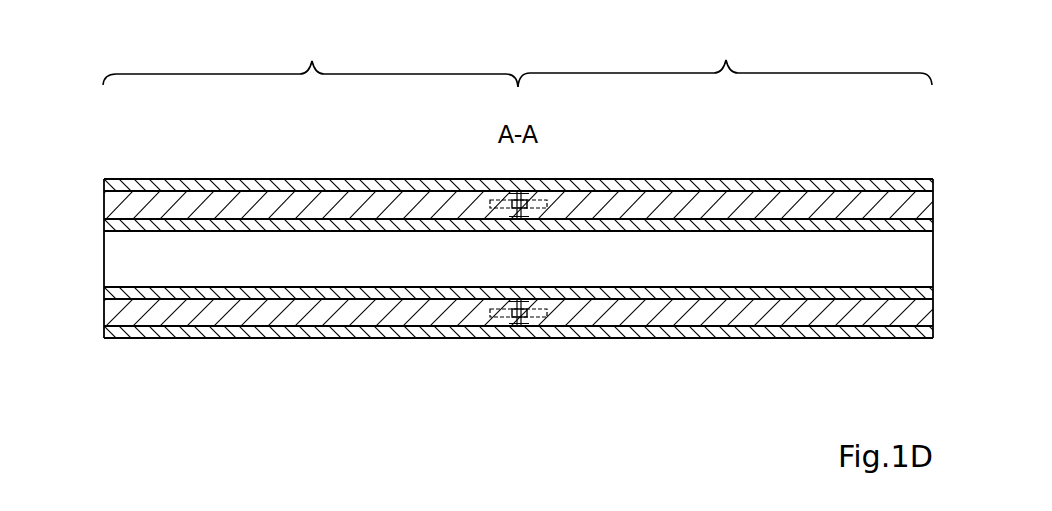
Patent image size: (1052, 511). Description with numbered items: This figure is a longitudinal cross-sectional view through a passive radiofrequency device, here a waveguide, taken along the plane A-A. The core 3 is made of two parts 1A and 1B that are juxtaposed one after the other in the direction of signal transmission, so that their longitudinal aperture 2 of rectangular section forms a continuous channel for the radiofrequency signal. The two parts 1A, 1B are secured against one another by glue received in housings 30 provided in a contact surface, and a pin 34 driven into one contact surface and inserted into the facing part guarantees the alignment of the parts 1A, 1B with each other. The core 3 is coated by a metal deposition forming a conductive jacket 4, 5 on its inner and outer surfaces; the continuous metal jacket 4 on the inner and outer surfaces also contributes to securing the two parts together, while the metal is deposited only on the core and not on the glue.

The part 1A is at (310, 49).
The part 1B is at (725, 49).
The longitudinal aperture 2 is at (510, 272).
The core 3 is at (296, 200).
The conductive jacket 4 is at (331, 232).
The conductive jacket 5 is at (708, 178).
The housing 30 is at (529, 309).
The pin 34 is at (541, 200).